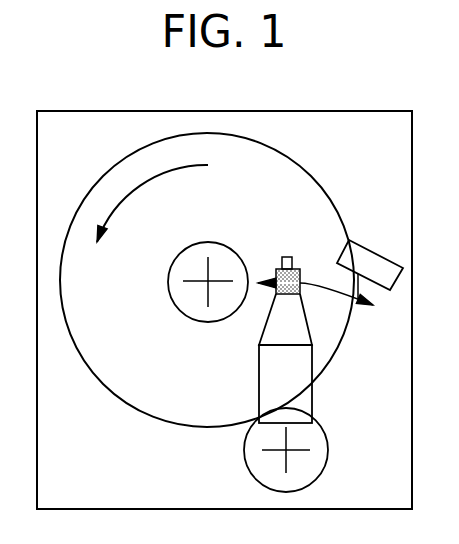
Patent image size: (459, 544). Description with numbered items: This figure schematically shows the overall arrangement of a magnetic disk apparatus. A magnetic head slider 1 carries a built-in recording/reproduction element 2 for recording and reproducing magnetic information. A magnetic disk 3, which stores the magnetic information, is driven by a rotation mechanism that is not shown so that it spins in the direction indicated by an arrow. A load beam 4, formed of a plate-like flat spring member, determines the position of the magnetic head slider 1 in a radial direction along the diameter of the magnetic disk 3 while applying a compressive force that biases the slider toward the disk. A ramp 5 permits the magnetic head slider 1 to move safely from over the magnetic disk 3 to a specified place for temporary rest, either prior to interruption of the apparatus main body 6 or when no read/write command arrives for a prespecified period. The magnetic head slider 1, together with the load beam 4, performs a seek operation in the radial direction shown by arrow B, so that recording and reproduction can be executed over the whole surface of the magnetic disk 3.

The magnetic head slider 1 is at (276, 272).
The recording/reproduction element 2 is at (285, 257).
The magnetic disk 3 is at (127, 390).
The load beam 4 is at (275, 327).
The ramp 5 is at (335, 111).
The apparatus main body 6 is at (380, 272).
The arrow B is at (322, 283).